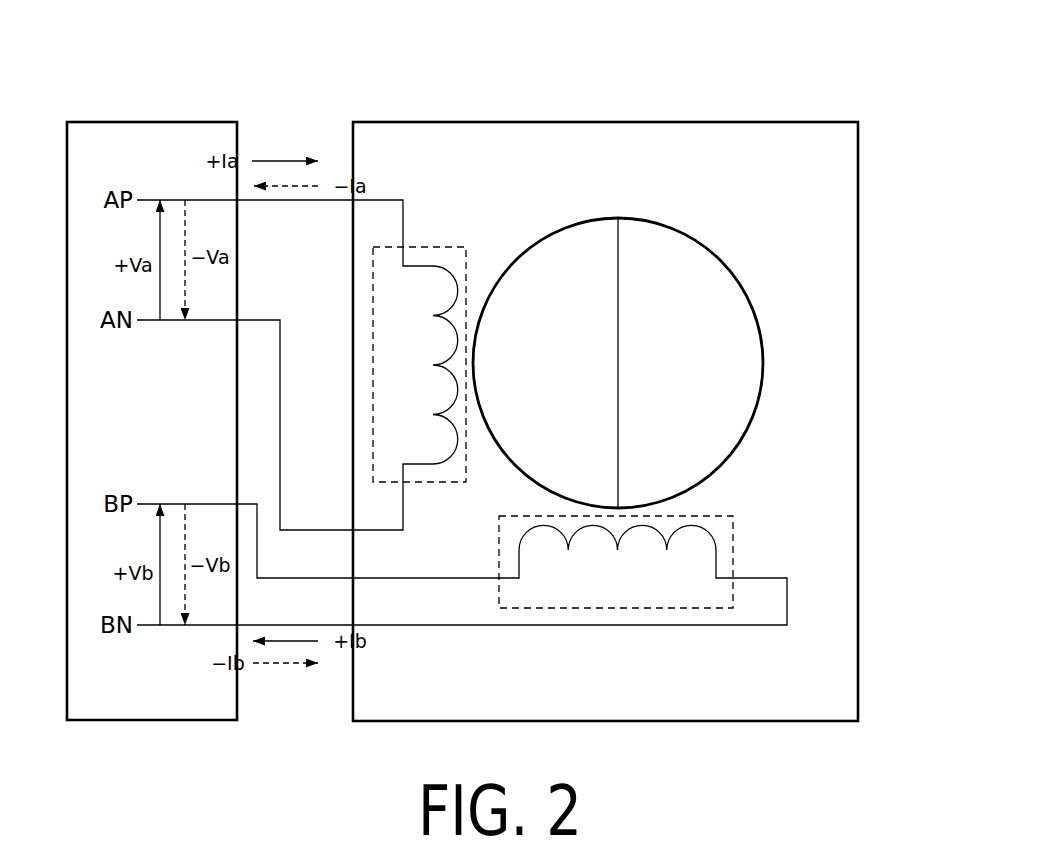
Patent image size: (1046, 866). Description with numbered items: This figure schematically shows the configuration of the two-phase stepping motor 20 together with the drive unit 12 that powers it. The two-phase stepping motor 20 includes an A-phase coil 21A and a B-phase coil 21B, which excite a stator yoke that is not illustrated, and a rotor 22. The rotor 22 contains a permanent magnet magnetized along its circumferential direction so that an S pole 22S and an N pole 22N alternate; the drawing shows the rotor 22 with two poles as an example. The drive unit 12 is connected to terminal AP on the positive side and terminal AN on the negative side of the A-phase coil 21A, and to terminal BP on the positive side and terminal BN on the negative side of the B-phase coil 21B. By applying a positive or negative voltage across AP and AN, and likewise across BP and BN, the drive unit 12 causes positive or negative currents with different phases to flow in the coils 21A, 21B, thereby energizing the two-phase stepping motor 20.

The drive unit 12 is at (157, 122).
The two-phase stepping motor 20 is at (707, 122).
The A-phase coil 21A is at (437, 247).
The B-phase coil 21B is at (737, 550).
The rotor 22 is at (649, 339).
The S pole 22S is at (557, 258).
The N pole 22N is at (711, 410).